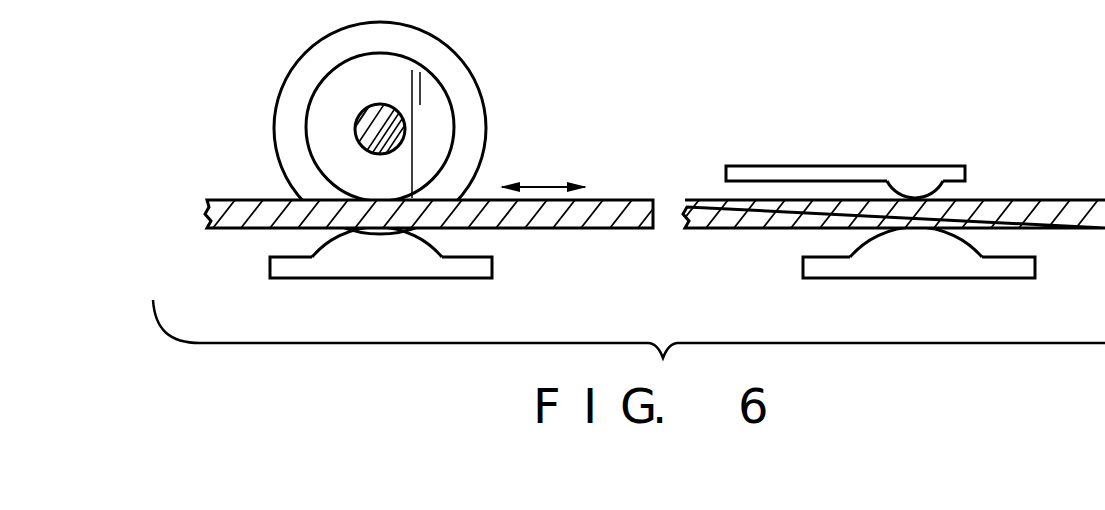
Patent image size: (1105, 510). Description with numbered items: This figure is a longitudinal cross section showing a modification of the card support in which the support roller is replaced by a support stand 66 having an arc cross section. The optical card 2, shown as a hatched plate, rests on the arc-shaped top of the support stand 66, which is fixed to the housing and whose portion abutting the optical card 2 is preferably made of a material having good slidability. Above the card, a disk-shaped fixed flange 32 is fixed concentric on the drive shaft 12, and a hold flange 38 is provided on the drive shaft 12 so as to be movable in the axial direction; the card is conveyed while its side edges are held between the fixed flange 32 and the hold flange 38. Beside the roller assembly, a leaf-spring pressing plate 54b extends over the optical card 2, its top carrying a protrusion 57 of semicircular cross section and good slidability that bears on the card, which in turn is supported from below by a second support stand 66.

The optical card 2 is at (240, 200).
The drive shaft 12 is at (400, 145).
The fixed flange 32 is at (478, 85).
The hold flange 38 is at (453, 120).
The pressing plate 54b is at (830, 166).
The protrusion 57 is at (931, 190).
The support stand 66 is at (287, 278).